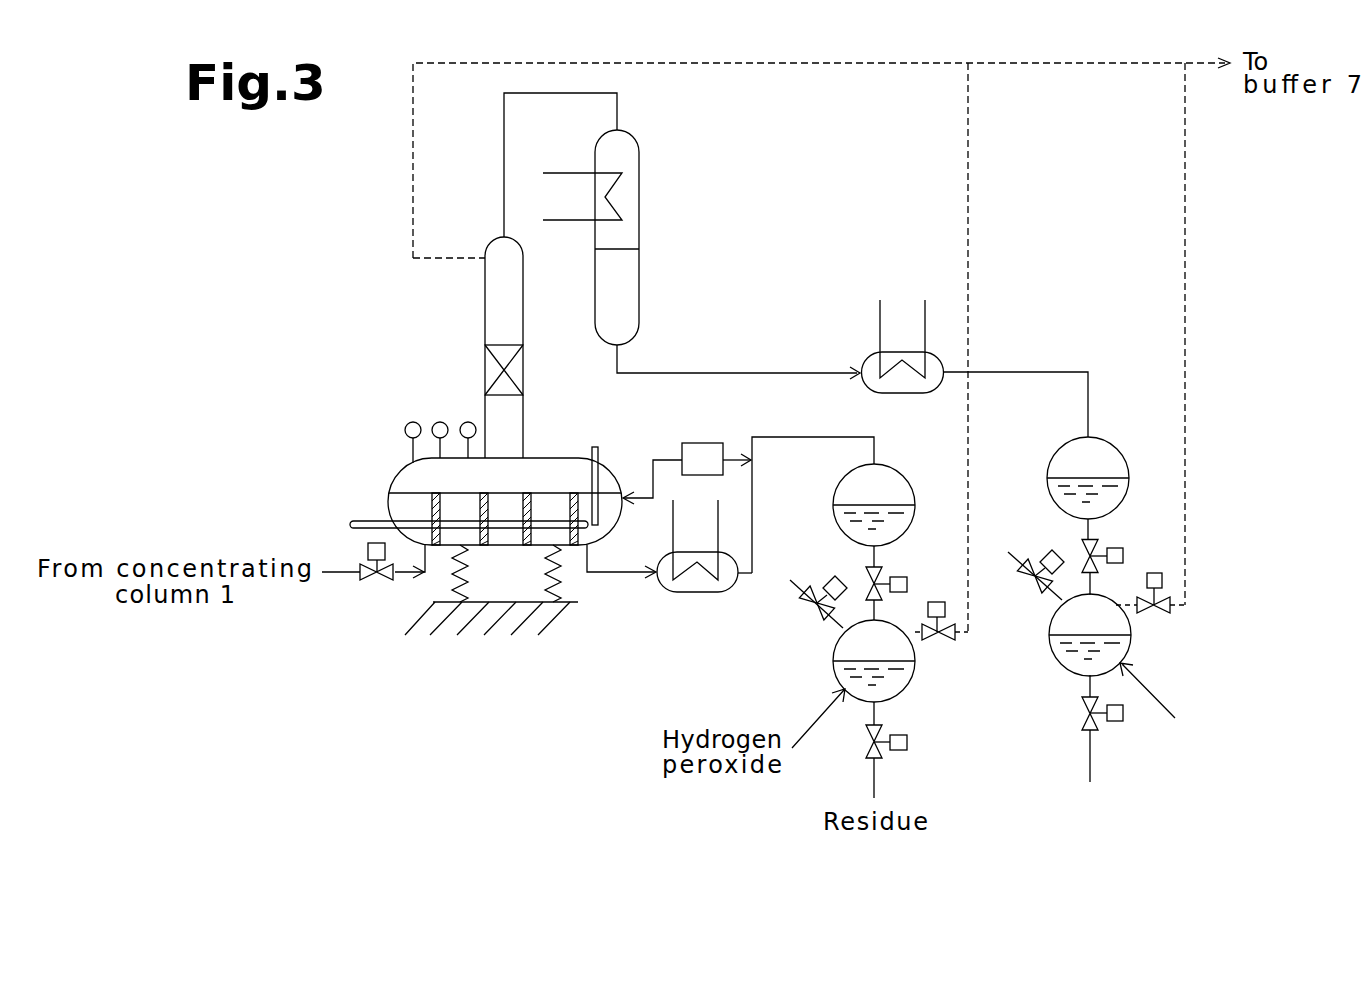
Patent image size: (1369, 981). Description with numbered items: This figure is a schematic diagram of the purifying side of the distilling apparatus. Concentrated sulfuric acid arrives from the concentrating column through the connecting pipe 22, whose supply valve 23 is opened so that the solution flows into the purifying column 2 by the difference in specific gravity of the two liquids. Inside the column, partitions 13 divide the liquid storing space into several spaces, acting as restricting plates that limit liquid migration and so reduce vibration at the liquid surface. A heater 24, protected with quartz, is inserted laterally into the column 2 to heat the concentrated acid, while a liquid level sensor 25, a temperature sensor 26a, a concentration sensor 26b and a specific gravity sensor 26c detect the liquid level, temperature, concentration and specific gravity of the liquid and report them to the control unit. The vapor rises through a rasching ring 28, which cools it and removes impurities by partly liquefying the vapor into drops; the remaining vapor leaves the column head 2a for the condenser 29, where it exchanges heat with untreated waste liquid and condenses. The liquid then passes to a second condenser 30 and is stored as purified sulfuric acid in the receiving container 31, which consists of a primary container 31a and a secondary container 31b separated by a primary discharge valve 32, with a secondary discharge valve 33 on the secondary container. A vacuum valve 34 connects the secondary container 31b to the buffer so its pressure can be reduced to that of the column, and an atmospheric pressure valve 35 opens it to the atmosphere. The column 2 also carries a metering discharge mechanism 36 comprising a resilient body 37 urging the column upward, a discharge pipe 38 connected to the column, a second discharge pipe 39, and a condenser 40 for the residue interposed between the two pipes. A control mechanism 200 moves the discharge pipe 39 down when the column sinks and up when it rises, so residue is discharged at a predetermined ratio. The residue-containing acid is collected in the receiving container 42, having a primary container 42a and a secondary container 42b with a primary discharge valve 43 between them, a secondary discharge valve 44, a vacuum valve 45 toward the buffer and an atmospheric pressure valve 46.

The purifying column 2 is at (523, 430).
The column head 2a is at (523, 307).
The partitions 13 is at (573, 507).
The connecting pipe 22 is at (338, 570).
The supply valve 23 is at (370, 582).
The heater 24 is at (360, 521).
The liquid level sensor 25 is at (598, 452).
The temperature sensor 26a is at (405, 430).
The concentration sensor 26b is at (436, 422).
The specific gravity sensor 26c is at (468, 422).
The rasching ring 28 is at (523, 368).
The condenser 29 is at (639, 218).
The second condenser 30 is at (868, 360).
The receiving container 31 is at (1139, 362).
The primary container 31a is at (1122, 454).
The secondary container 31b is at (1130, 637).
The primary discharge valve 32 is at (1123, 548).
The secondary discharge valve 33 is at (1120, 722).
The vacuum valve 34 is at (1165, 580).
The atmospheric pressure valve 35 is at (1030, 580).
The metering discharge mechanism 36 is at (659, 636).
The resilient body 37 is at (546, 575).
The discharge pipe 38 is at (615, 572).
The discharge pipe 39 is at (808, 437).
The condenser 40 is at (712, 592).
The receiving container 42 is at (886, 621).
The primary container 42a is at (906, 484).
The secondary container 42b is at (915, 677).
The primary discharge valve 43 is at (908, 570).
The secondary discharge valve 44 is at (907, 743).
The vacuum valve 45 is at (937, 602).
The atmospheric pressure valve 46 is at (808, 604).
The control mechanism 200 is at (705, 443).